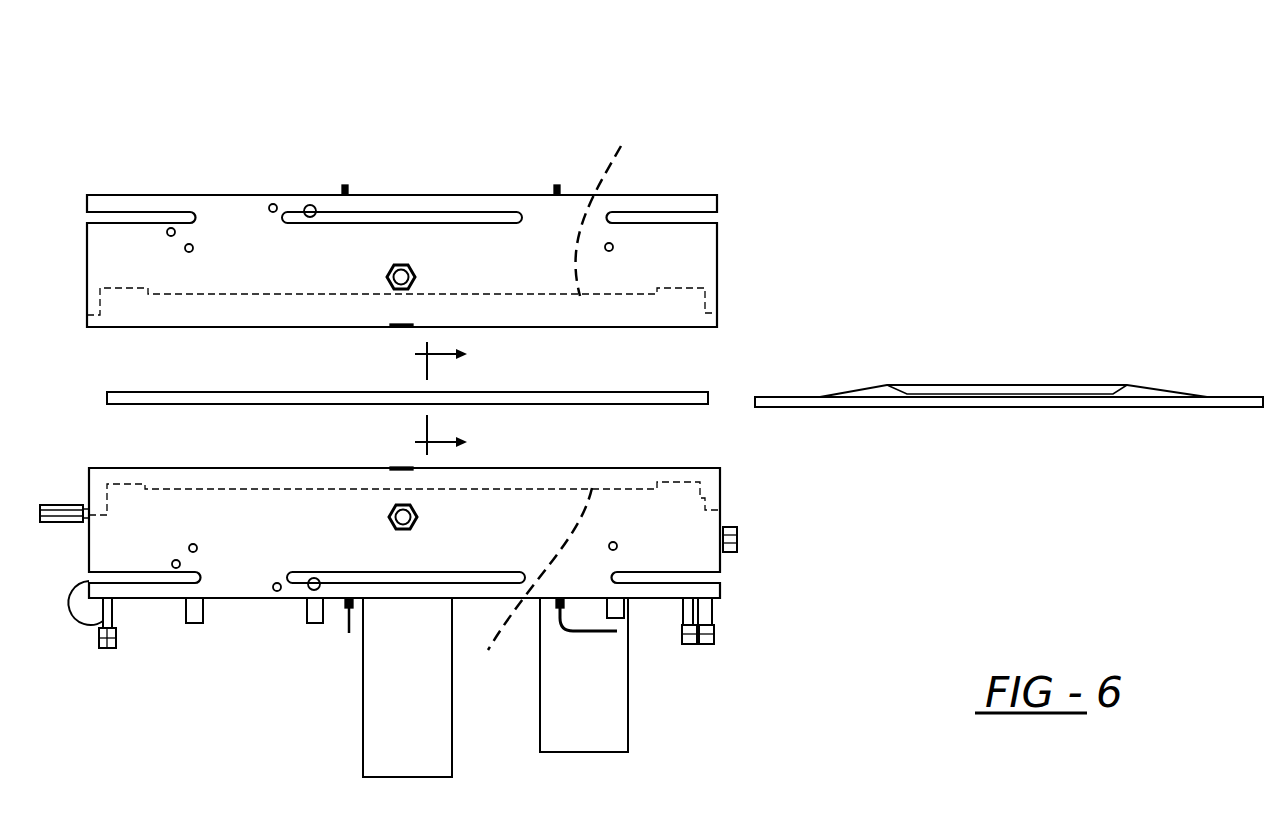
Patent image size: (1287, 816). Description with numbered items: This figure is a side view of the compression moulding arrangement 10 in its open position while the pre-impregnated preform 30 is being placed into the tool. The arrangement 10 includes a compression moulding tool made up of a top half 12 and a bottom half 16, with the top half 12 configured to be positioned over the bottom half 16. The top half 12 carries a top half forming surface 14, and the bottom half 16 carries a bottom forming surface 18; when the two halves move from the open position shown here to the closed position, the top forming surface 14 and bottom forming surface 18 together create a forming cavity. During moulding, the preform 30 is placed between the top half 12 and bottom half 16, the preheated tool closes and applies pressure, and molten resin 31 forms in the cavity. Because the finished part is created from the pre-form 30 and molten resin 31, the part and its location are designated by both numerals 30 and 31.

The compression moulding arrangement 10 is at (158, 116).
The top half 12 is at (690, 248).
The top half forming surface 14 is at (610, 209).
The bottom half 16 is at (678, 527).
The bottom forming surface 18 is at (538, 580).
The pre-impregnated preform 30 is at (105, 400).
The molten resin 31 is at (1003, 382).